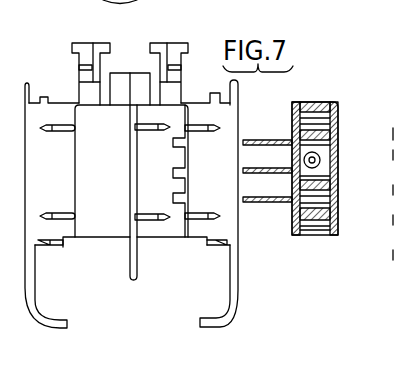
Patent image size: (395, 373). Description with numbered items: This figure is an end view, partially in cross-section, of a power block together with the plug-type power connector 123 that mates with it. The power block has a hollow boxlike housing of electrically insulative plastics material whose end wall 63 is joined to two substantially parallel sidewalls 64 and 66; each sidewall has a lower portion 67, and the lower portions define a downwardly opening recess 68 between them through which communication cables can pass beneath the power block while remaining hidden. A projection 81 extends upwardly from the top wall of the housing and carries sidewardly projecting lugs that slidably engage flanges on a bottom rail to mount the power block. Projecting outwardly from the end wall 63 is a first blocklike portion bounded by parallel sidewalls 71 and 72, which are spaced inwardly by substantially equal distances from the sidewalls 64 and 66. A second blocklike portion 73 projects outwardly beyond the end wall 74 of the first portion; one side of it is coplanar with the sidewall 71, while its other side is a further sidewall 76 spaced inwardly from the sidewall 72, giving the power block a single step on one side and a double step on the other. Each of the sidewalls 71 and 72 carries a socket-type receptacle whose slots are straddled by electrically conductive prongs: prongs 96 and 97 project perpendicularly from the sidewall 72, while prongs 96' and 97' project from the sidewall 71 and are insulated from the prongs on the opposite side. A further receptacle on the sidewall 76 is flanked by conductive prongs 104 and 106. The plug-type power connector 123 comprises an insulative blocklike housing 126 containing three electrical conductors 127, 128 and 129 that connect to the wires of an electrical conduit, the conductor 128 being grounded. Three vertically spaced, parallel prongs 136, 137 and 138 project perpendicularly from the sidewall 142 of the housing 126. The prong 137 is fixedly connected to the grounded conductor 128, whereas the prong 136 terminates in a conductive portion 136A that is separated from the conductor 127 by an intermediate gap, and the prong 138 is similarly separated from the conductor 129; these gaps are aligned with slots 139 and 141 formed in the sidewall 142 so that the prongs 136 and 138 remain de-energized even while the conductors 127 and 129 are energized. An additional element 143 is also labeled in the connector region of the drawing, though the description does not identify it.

The sidewall 64 is at (18, 123).
The projection 81 is at (160, 58).
The prong 96' is at (51, 143).
The prong 97' is at (51, 201).
The prong 104 is at (163, 128).
The prong 106 is at (163, 216).
The end wall 74 is at (174, 164).
The prong 96 is at (203, 141).
The end wall 63 is at (230, 171).
The prong 97 is at (206, 202).
The sidewall 71 is at (70, 245).
The second blocklike portion 73 is at (105, 237).
The sidewall 72 is at (202, 236).
The sidewall 76 is at (141, 236).
The lower portion 67 is at (228, 308).
The recess 68 is at (93, 290).
The sidewall 66 is at (233, 253).
The plug-type power connector 123 is at (319, 91).
The electrical conductor 127 is at (323, 108).
The conductive portion 136A is at (327, 118).
The slot 139 is at (298, 108).
The prong 136 is at (293, 127).
The prong 137 is at (293, 165).
The prong 138 is at (293, 195).
The electrical conductor 128 is at (333, 170).
The nut 143 is at (333, 187).
The slot 141 is at (293, 215).
The sidewall 142 is at (297, 227).
The housing 126 is at (313, 237).
The electrical conductor 129 is at (323, 235).